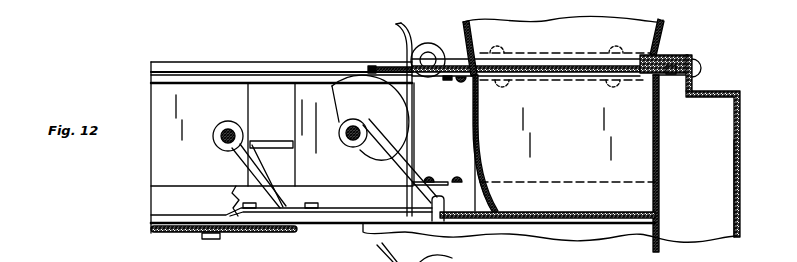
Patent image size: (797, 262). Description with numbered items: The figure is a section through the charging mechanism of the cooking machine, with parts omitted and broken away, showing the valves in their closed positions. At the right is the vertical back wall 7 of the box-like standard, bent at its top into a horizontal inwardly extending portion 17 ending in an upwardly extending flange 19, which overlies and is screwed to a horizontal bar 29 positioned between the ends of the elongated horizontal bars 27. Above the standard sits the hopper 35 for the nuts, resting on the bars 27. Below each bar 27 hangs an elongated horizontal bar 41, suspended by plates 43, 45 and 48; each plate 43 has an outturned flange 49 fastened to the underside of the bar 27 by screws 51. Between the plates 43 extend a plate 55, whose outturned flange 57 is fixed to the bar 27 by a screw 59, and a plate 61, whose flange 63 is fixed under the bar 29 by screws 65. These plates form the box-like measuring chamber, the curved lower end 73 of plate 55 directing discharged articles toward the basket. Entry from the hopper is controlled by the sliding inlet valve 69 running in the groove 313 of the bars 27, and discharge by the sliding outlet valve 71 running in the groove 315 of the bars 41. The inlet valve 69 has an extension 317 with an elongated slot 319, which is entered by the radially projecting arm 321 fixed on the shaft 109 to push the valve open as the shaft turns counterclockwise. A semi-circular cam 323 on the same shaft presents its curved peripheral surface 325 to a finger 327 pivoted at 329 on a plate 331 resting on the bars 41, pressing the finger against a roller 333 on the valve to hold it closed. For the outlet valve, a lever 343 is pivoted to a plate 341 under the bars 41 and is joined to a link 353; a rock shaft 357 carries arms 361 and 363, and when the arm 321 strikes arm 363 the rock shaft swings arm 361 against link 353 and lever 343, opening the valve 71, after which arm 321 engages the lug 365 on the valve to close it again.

The back wall 7 is at (733, 170).
The horizontal inwardly extending portion 17 is at (707, 93).
The upwardly extending flange 19 is at (693, 81).
The elongated horizontal bar 27 is at (182, 66).
The horizontal bar 29 is at (667, 58).
The hopper 35 is at (476, 41).
The elongated horizontal bar 41 is at (158, 202).
The plate 43 is at (473, 167).
The plate 45 is at (296, 100).
The plate 48 is at (255, 116).
The outturned flange 49 is at (545, 82).
The screw 51 is at (616, 88).
The plate 55 is at (479, 128).
The outturned flange 57 is at (448, 83).
The screw 59 is at (461, 88).
The plate 61 is at (654, 130).
The outturned flange 63 is at (681, 76).
The screw 65 is at (672, 76).
The sliding inlet valve 69 is at (544, 60).
The sliding outlet valve 71 is at (541, 216).
The lower end of plate 55 73 is at (491, 194).
The shaft 109 is at (347, 138).
The groove 313 is at (238, 72).
The groove 315 is at (188, 218).
The extension 317 is at (374, 69).
The elongated slot 319 is at (398, 61).
The radially projecting arm 321 is at (386, 136).
The semi-circular cam 323 is at (296, 122).
The curved peripheral surface 325 is at (334, 108).
The finger 327 is at (403, 26).
The pivot 329 is at (408, 191).
The plate 331 is at (443, 176).
The roller 333 is at (426, 43).
The plate 341 is at (162, 234).
The lever 343 is at (225, 192).
The link 353 is at (297, 206).
The rock shaft 357 is at (228, 121).
The arm 361 is at (263, 176).
The arm 363 is at (269, 147).
The lug 365 is at (433, 209).